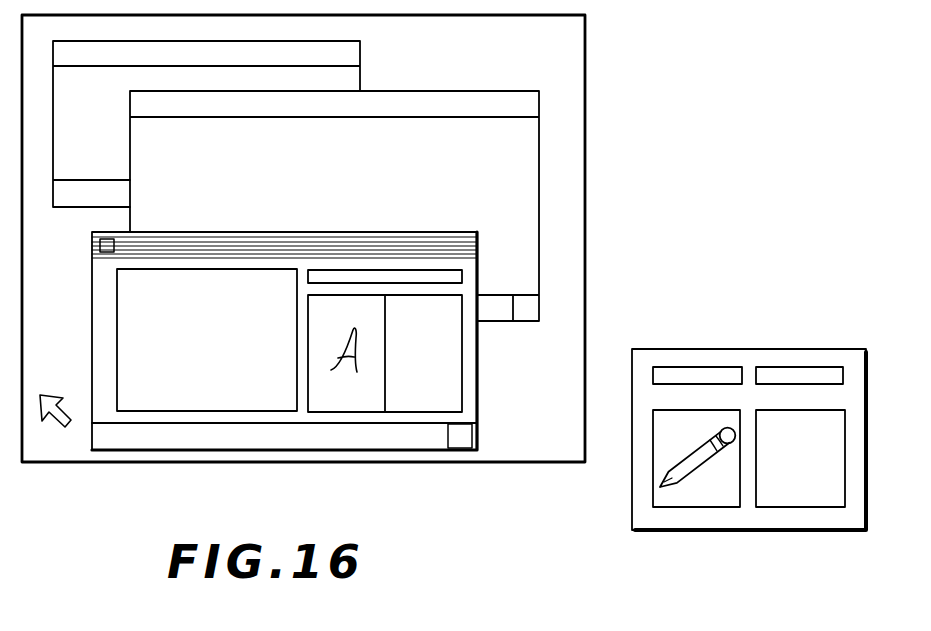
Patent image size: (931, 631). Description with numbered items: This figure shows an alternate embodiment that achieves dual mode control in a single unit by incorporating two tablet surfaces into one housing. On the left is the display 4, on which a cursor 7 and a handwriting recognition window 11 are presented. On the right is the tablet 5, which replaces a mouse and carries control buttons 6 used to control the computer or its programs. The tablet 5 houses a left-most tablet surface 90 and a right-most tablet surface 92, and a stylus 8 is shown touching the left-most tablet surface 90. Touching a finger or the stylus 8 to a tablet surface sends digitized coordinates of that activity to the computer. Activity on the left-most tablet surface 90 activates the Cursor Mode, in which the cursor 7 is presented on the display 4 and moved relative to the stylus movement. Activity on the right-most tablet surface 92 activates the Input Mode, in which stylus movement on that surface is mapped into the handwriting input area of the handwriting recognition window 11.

The display 4 is at (55, 270).
The handwriting recognition window 11 is at (462, 243).
The cursor 7 is at (50, 421).
The tablet 5 is at (750, 533).
The control buttons 6 is at (670, 366).
The stylus 8 is at (707, 442).
The left-most tablet surface 90 is at (667, 432).
The right-most tablet surface 92 is at (840, 427).